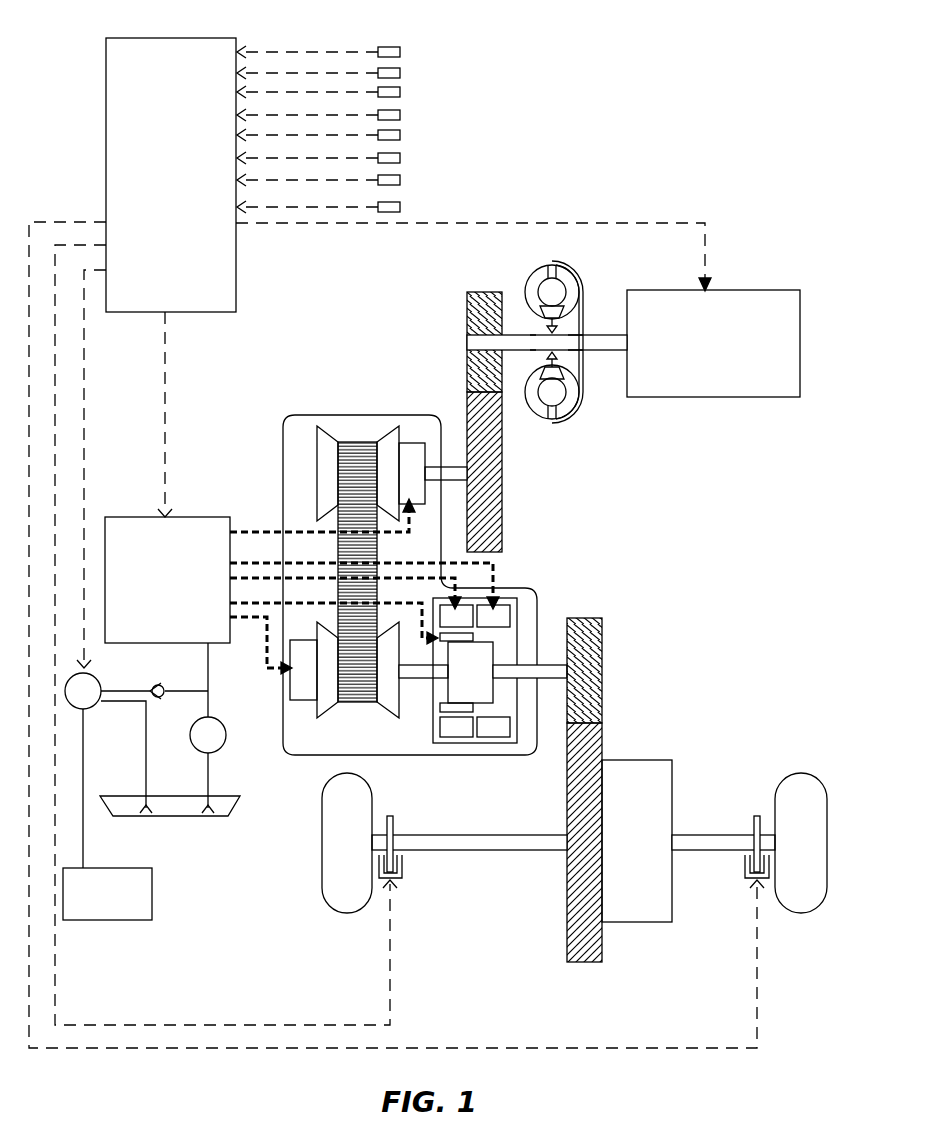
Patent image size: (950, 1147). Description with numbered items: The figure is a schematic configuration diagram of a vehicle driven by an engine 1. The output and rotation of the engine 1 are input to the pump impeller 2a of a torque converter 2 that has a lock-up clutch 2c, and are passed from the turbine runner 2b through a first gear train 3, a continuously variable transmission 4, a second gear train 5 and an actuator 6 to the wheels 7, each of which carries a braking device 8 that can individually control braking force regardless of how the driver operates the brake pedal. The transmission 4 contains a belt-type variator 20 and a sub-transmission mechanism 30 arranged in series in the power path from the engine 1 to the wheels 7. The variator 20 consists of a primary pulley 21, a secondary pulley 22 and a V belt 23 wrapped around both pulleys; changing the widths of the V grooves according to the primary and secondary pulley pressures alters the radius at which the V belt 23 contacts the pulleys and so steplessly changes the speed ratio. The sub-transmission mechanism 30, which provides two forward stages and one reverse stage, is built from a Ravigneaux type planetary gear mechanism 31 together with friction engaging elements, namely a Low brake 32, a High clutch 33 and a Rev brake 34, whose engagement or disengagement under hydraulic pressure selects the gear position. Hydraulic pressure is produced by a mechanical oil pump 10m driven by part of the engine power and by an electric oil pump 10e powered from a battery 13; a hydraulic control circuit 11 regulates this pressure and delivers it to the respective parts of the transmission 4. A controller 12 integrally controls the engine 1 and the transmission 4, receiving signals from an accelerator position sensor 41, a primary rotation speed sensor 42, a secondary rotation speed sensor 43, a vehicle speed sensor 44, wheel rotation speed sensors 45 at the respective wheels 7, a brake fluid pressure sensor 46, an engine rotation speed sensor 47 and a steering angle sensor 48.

The engine 1 is at (778, 296).
The torque converter 2 is at (569, 319).
The pump impeller 2a is at (536, 288).
The turbine runner 2b is at (565, 422).
The lock-up clutch 2c is at (585, 382).
The first gear train 3 is at (478, 284).
The transmission 4 is at (437, 414).
The second gear train 5 is at (585, 972).
The actuator 6 is at (638, 908).
The wheels 7 is at (345, 898).
The braking devices 8 is at (405, 868).
The electric oil pump 10e is at (92, 706).
The mechanical oil pump 10m is at (200, 747).
The hydraulic control circuit 11 is at (124, 523).
The controller 12 is at (204, 41).
The battery 13 is at (143, 906).
The variator 20 is at (351, 581).
The primary pulley 21 is at (314, 479).
The secondary pulley 22 is at (350, 714).
The V belt 23 is at (366, 440).
The sub-transmission mechanism 30 is at (524, 649).
The Ravigneaux type planetary gear mechanism 31 is at (478, 660).
The Low brake 32 is at (460, 618).
The High clutch 33 is at (457, 708).
The Rev brake 34 is at (493, 618).
The accelerator position sensor 41 is at (400, 207).
The primary rotation speed sensor 42 is at (400, 180).
The secondary rotation speed sensor 43 is at (400, 158).
The vehicle speed sensor 44 is at (400, 135).
The wheel rotation speed sensors 45 is at (400, 115).
The brake fluid pressure sensor 46 is at (400, 92).
The engine rotation speed sensor 47 is at (400, 73).
The steering angle sensor 48 is at (400, 52).